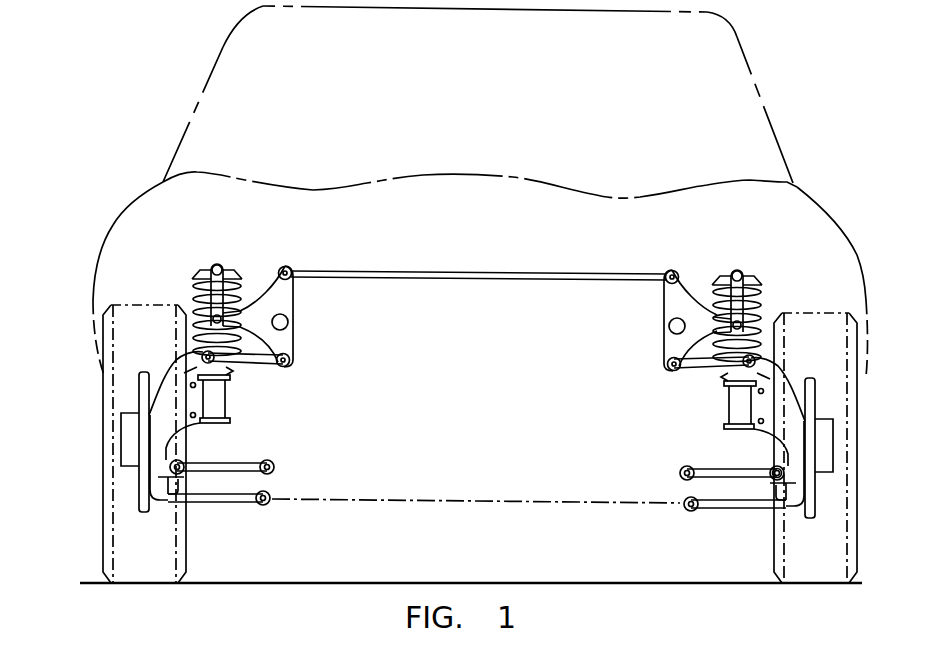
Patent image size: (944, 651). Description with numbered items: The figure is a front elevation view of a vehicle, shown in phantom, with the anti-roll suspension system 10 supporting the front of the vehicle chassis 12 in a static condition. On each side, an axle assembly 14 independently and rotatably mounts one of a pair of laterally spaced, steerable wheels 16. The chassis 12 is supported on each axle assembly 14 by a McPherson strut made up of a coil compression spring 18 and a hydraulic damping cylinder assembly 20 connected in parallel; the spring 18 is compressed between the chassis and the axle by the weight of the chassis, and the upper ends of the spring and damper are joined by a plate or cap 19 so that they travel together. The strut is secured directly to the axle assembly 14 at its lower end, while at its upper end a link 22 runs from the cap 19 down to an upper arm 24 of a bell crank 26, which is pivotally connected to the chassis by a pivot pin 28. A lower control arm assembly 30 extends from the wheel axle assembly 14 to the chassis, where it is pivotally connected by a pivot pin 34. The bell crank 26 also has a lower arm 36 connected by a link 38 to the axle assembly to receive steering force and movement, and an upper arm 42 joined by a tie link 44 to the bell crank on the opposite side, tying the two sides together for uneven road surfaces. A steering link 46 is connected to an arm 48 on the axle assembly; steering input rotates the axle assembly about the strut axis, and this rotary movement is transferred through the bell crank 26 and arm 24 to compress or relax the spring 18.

The anti-roll suspension system 10 is at (477, 389).
The vehicle chassis 12 is at (217, 53).
The axle assembly 14 is at (177, 414).
The wheels 16 is at (154, 303).
The coil compression spring 18 is at (229, 308).
The plate or cap 19 is at (219, 264).
The hydraulic damping cylinder assembly 20 is at (229, 372).
The link 22 is at (197, 292).
The upper arm of bell crank 24 is at (204, 343).
The bell crank 26 is at (295, 308).
The pivot pin 28 is at (292, 322).
The lower control arm assembly 30 is at (733, 505).
The pivot pin 34 is at (685, 506).
The lower arm 36 is at (294, 359).
The link 38 is at (275, 360).
The upper arm 42 is at (292, 293).
The tie link 44 is at (445, 268).
The steering link 46 is at (715, 463).
The arm 48 is at (770, 465).